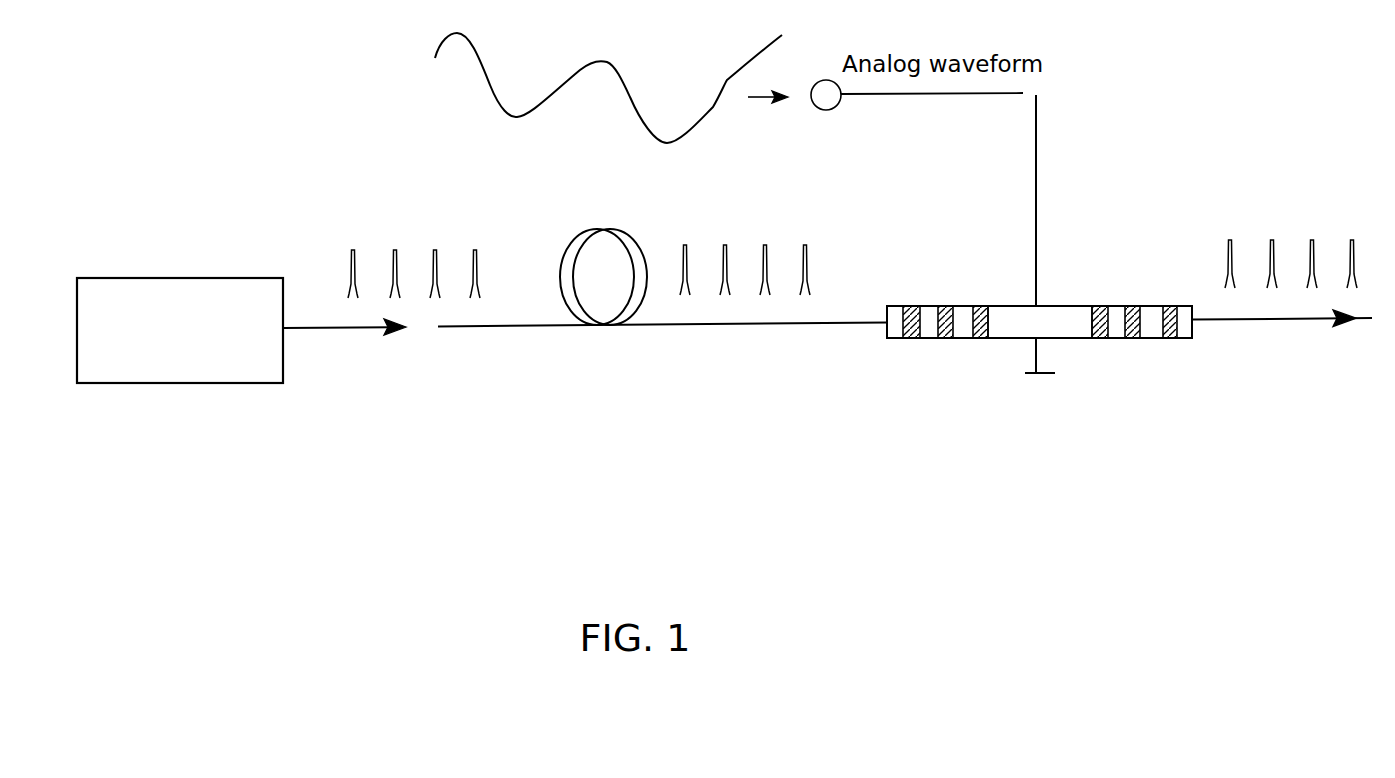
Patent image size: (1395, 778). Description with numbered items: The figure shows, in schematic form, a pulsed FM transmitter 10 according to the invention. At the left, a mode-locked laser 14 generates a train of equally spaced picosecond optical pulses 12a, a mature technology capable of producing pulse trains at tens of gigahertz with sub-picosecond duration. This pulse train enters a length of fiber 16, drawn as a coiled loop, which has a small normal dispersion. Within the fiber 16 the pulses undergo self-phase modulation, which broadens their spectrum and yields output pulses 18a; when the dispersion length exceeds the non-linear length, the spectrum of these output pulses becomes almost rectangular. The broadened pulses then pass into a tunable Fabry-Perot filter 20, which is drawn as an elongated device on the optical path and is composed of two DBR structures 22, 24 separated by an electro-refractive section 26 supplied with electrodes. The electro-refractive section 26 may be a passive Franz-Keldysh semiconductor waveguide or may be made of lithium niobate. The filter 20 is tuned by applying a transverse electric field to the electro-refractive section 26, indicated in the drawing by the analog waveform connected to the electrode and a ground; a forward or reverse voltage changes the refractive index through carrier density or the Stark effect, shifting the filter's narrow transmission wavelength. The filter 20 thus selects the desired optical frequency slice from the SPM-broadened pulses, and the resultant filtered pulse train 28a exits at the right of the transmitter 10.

The pulsed FM transmitter 10 is at (644, 402).
The train of equally spaced picosecond optical pulses 12a is at (412, 258).
The mode-locked laser 14 is at (228, 385).
The fiber 16 is at (582, 336).
The output pulses 18a is at (745, 252).
The tunable Fabry-Perot filter 20 is at (1039, 243).
The DBR structure 22 is at (930, 305).
The DBR structure 24 is at (1118, 308).
The electro-refractive section 26 is at (1025, 325).
The filtered pulse train 28a is at (1270, 243).